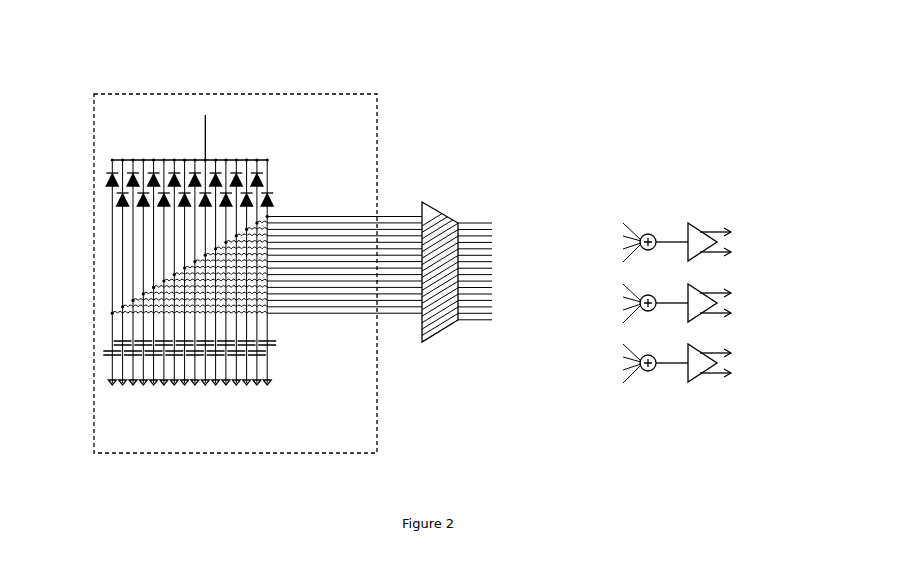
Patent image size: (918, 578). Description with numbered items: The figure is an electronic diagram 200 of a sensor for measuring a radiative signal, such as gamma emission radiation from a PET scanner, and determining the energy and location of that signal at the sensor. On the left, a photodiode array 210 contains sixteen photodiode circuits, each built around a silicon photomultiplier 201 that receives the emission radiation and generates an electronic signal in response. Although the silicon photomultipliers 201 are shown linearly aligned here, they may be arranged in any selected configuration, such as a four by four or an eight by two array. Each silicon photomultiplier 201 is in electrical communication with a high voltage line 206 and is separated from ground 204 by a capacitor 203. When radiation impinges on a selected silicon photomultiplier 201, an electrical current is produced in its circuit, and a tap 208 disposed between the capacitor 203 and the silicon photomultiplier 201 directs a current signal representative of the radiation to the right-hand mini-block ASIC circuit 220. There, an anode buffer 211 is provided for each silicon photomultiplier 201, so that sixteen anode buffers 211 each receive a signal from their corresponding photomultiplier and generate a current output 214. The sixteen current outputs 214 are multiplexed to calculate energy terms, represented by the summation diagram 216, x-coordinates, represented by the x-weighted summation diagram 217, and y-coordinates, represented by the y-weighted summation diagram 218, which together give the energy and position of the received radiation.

The electronic diagram 200 is at (595, 62).
The silicon photomultiplier 201 is at (85, 188).
The capacitor 203 is at (85, 342).
The ground 204 is at (100, 384).
The high voltage line 206 is at (212, 103).
The tap 208 is at (85, 247).
The photodiode array 210 is at (363, 87).
The anode buffer 211 is at (441, 345).
The current output 214 is at (478, 208).
The summation diagram 216 is at (755, 225).
The x-weighted summation diagram 217 is at (755, 297).
The y-weighted summation diagram 218 is at (755, 360).
The mini-block ASIC circuit 220 is at (660, 180).